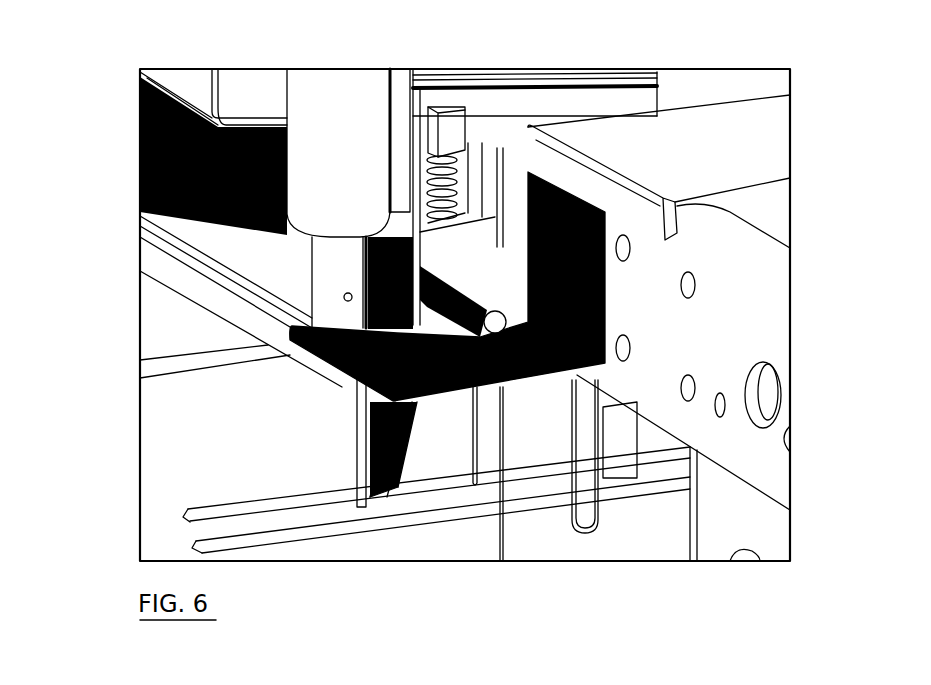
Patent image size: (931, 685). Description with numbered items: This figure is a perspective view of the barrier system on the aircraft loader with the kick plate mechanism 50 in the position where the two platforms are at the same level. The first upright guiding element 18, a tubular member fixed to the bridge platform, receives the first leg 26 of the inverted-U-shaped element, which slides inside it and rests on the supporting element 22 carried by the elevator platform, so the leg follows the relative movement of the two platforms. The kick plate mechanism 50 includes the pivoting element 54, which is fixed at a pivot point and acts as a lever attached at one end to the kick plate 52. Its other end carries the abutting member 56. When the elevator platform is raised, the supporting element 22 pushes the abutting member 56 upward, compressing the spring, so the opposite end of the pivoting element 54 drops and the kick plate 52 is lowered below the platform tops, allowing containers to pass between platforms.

The first upright guiding element 18 is at (312, 108).
The pivoting element 54 is at (488, 245).
The first leg 26 is at (353, 270).
The supporting element 22 is at (353, 388).
The abutting member 56 is at (445, 398).
The kick plate mechanism 50 is at (492, 540).
The kick plate 52 is at (548, 545).